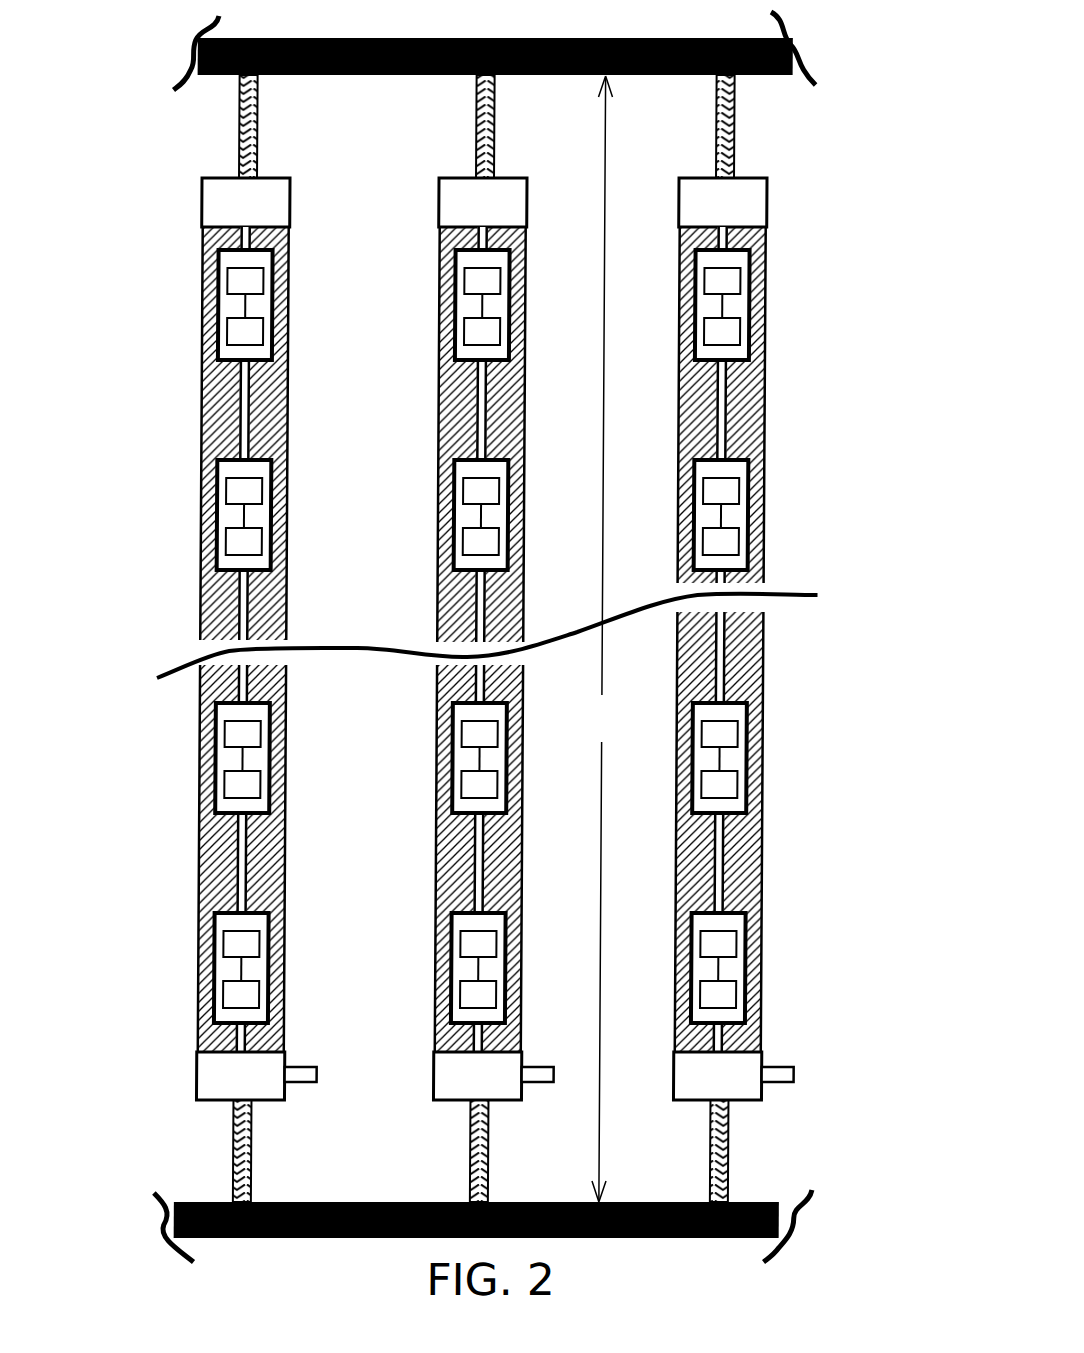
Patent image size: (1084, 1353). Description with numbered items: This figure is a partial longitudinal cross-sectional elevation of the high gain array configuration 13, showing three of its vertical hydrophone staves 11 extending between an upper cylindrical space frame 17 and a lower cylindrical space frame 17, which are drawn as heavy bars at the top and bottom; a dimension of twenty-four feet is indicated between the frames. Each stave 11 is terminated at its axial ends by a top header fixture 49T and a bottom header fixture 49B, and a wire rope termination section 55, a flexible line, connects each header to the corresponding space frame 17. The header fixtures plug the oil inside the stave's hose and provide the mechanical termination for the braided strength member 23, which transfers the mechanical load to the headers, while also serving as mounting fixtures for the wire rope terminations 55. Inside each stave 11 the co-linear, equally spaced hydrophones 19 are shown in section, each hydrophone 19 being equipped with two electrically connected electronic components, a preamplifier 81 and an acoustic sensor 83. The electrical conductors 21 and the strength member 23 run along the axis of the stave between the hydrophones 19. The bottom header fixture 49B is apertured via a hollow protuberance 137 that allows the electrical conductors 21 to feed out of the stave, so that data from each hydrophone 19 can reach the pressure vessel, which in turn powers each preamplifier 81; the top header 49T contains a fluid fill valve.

The high gain array configuration 13 is at (506, 637).
The cylindrical space frame 17 is at (298, 1202).
The wire rope termination section 55 is at (734, 135).
The top header fixture 49T is at (202, 200).
The bottom header fixture 49B is at (202, 1078).
The hydrophone stave 11 is at (205, 413).
The hydrophone 19 is at (481, 627).
The acoustic sensor 83 is at (248, 278).
The preamplifier 81 is at (242, 330).
The electrical conductor 21 is at (481, 639).
The braided strength member 23 is at (241, 851).
The hollow protuberance 137 is at (298, 1074).